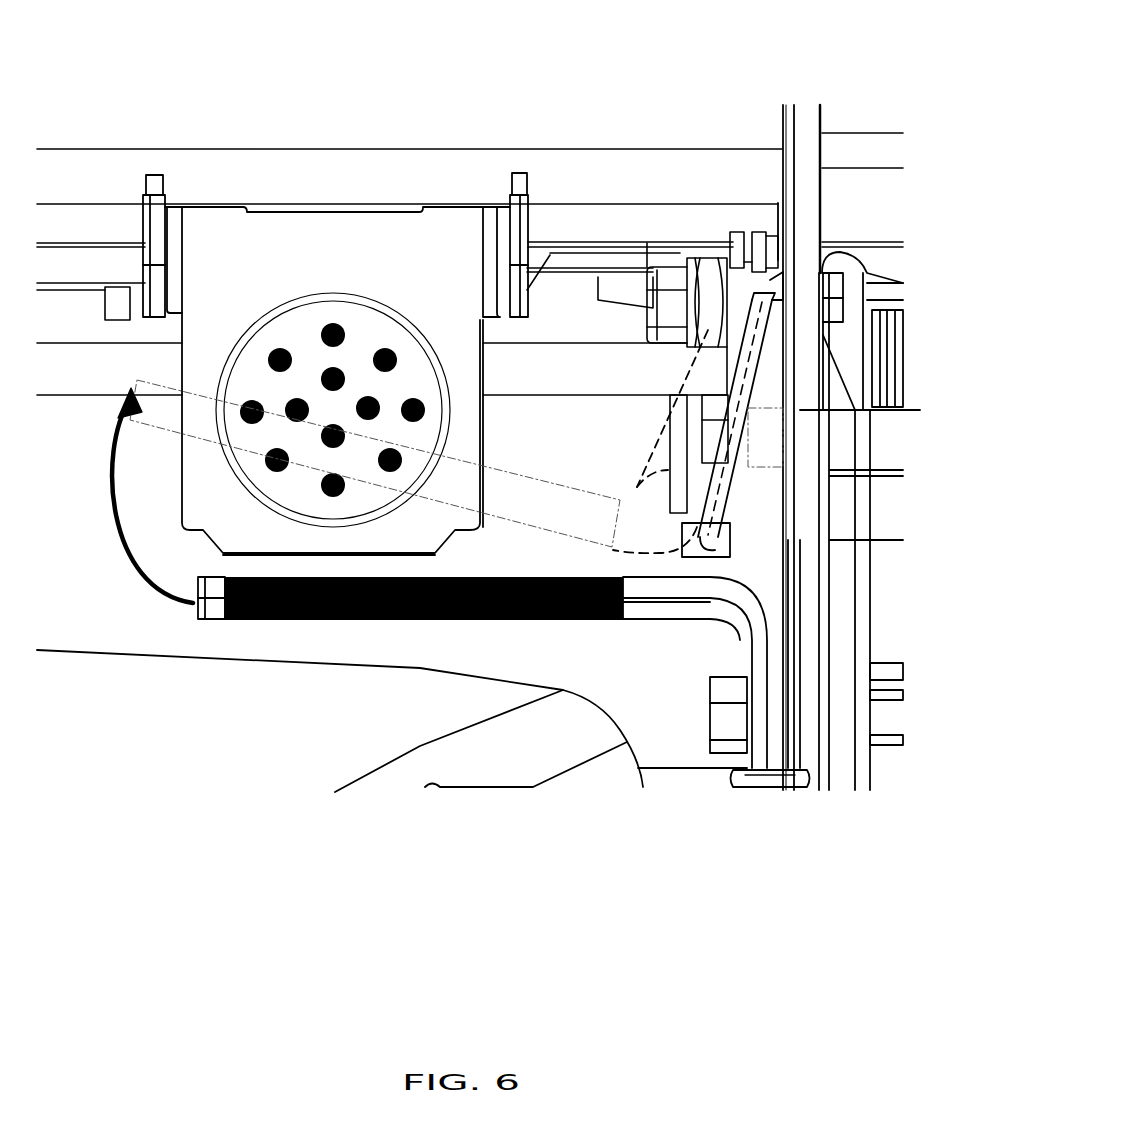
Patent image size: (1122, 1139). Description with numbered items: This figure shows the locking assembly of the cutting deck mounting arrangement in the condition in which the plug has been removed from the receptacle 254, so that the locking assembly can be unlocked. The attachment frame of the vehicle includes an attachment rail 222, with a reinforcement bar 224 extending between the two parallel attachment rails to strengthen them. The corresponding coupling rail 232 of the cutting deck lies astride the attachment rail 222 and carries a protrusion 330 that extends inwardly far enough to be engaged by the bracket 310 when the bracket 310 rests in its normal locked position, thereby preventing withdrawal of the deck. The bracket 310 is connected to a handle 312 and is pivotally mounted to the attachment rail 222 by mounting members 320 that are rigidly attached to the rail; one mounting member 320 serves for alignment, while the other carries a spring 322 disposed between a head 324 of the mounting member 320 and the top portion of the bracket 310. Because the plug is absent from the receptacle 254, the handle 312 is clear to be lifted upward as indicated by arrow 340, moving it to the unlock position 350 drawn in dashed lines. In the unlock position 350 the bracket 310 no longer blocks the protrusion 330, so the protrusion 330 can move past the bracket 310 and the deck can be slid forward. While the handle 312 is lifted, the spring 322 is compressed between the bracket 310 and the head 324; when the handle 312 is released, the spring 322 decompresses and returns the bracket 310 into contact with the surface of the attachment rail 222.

The reinforcement bar 224 is at (80, 160).
The receptacle 254 is at (288, 326).
The unlock position 350 is at (547, 500).
The arrow 340 is at (130, 543).
The handle 312 is at (217, 603).
The coupling rail 232 is at (842, 747).
The head 324 is at (657, 260).
The mounting member 320 is at (710, 272).
The spring 322 is at (720, 253).
The bracket 310 is at (765, 245).
The attachment rail 222 is at (807, 120).
The protrusion 330 is at (770, 430).